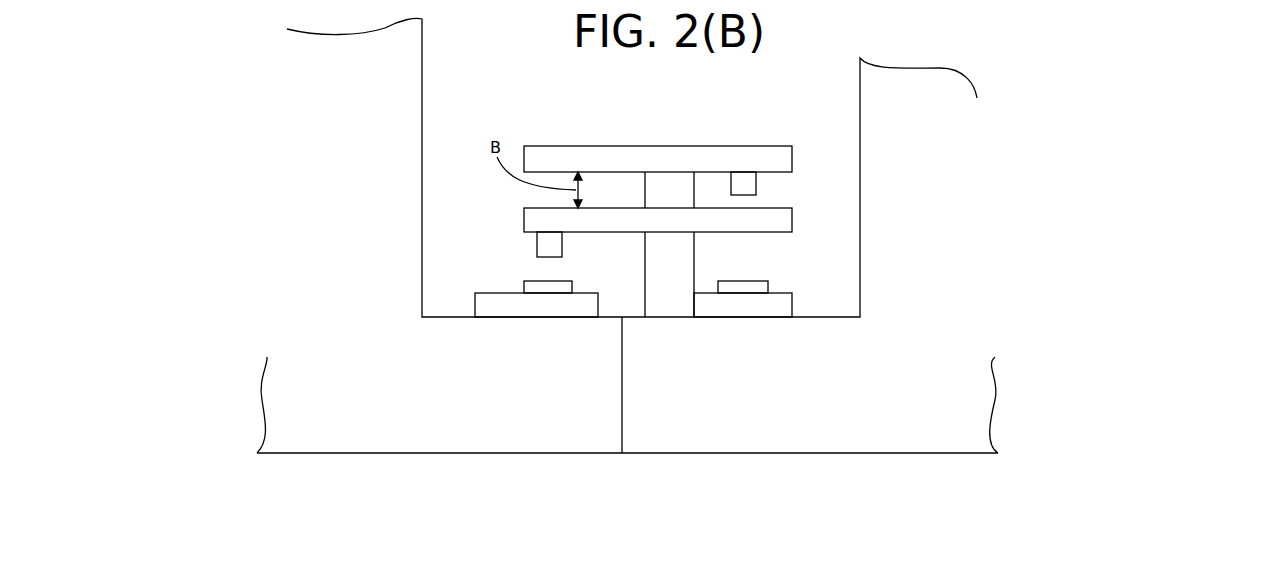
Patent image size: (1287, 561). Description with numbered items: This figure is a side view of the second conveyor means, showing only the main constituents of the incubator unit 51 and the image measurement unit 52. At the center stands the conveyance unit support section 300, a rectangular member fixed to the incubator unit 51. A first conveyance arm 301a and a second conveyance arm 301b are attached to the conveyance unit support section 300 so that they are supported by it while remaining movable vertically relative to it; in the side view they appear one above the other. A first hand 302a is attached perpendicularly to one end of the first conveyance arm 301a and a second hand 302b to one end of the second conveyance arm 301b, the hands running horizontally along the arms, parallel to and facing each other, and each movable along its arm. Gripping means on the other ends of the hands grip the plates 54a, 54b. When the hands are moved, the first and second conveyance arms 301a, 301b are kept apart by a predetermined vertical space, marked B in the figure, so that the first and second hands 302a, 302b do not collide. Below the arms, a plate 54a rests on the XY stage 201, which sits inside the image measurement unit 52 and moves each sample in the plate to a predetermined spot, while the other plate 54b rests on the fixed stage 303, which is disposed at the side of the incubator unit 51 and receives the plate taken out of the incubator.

The conveyance unit support section 300 is at (645, 197).
The first conveyance arm 301a is at (792, 161).
The first hand 302a is at (756, 183).
The second conveyance arm 301b is at (524, 215).
The second hand 302b is at (536, 246).
The plate 54a is at (524, 284).
The plate 54b is at (755, 280).
The XY stage 201 is at (475, 306).
The fixed stage 303 is at (792, 308).
The image measurement unit 52 is at (439, 405).
The incubator unit 51 is at (810, 405).